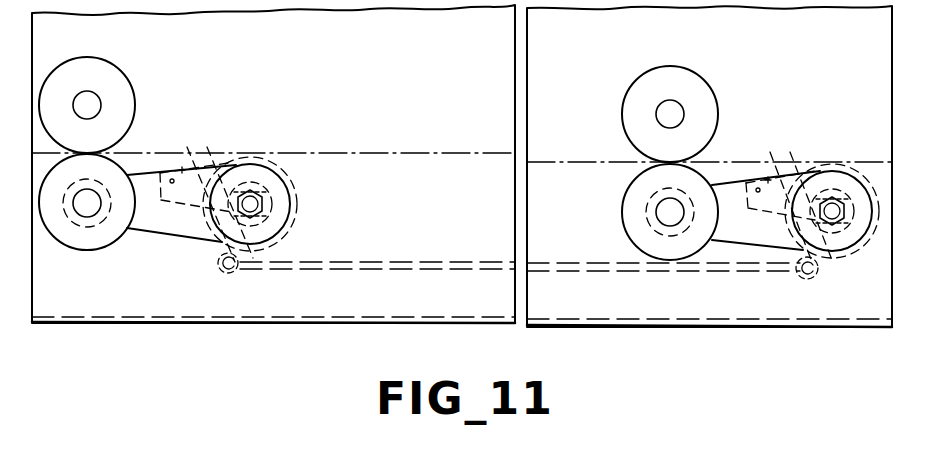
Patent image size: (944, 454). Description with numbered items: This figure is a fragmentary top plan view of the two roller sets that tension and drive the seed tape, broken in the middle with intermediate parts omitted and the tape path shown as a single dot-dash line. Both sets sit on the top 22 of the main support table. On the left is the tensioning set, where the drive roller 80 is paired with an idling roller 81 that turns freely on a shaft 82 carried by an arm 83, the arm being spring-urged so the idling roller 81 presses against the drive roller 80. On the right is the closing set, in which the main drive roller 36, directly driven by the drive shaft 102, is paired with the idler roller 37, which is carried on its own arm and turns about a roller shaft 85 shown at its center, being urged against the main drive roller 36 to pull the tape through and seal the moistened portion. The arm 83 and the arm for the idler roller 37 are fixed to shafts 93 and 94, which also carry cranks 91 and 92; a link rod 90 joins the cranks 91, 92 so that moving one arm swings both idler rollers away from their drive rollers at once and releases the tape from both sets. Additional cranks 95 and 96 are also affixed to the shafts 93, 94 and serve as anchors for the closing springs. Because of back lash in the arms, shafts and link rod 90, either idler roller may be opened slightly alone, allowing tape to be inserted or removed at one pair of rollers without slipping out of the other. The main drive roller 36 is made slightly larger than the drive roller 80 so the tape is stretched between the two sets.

The top 22 is at (424, 65).
The main drive roller 36 is at (712, 102).
The idler roller 37 is at (628, 219).
The drive roller 80 is at (120, 93).
The idling roller 81 is at (97, 245).
The shaft 82 is at (82, 210).
The arm 83 is at (160, 226).
The roller shaft 85 is at (658, 206).
The link rod 90 is at (565, 270).
The crank 91 is at (233, 270).
The crank 92 is at (820, 270).
The shaft 93 is at (258, 203).
The shaft 94 is at (836, 209).
The crank 95 is at (188, 148).
The crank 96 is at (772, 152).
The drive shaft 102 is at (676, 118).